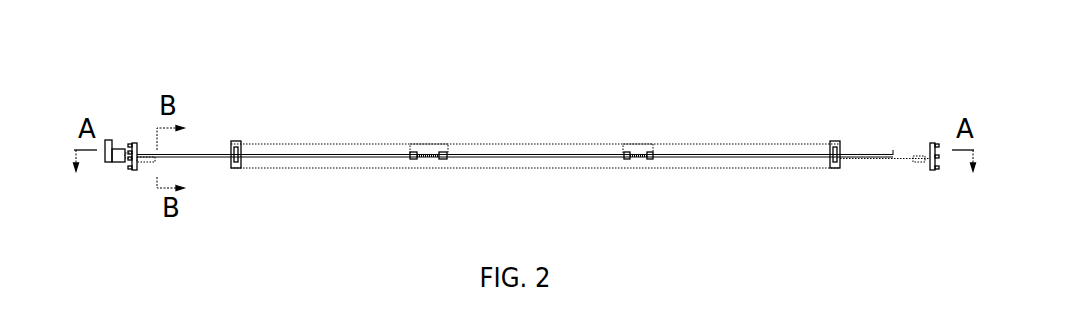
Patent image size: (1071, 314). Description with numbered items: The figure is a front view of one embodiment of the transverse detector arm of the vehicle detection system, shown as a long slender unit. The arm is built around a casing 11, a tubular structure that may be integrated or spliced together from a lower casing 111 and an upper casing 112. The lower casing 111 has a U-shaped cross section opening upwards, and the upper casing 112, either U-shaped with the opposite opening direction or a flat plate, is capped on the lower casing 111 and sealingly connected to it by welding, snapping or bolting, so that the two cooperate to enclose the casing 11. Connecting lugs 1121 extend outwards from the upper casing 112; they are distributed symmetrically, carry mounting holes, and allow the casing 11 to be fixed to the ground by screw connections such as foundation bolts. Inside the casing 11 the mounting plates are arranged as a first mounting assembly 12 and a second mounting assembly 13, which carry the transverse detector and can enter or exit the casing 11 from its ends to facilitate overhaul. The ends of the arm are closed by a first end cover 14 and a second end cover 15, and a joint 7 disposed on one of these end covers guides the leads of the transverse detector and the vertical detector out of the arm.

The joint 7 is at (114, 141).
The casing 11 is at (515, 112).
The lower casing 111 is at (290, 153).
The upper casing 112 is at (352, 152).
The connecting lug 1121 is at (427, 143).
The first mounting assembly 12 is at (201, 153).
The second mounting assembly 13 is at (866, 153).
The first end cover 14 is at (134, 172).
The second end cover 15 is at (930, 143).